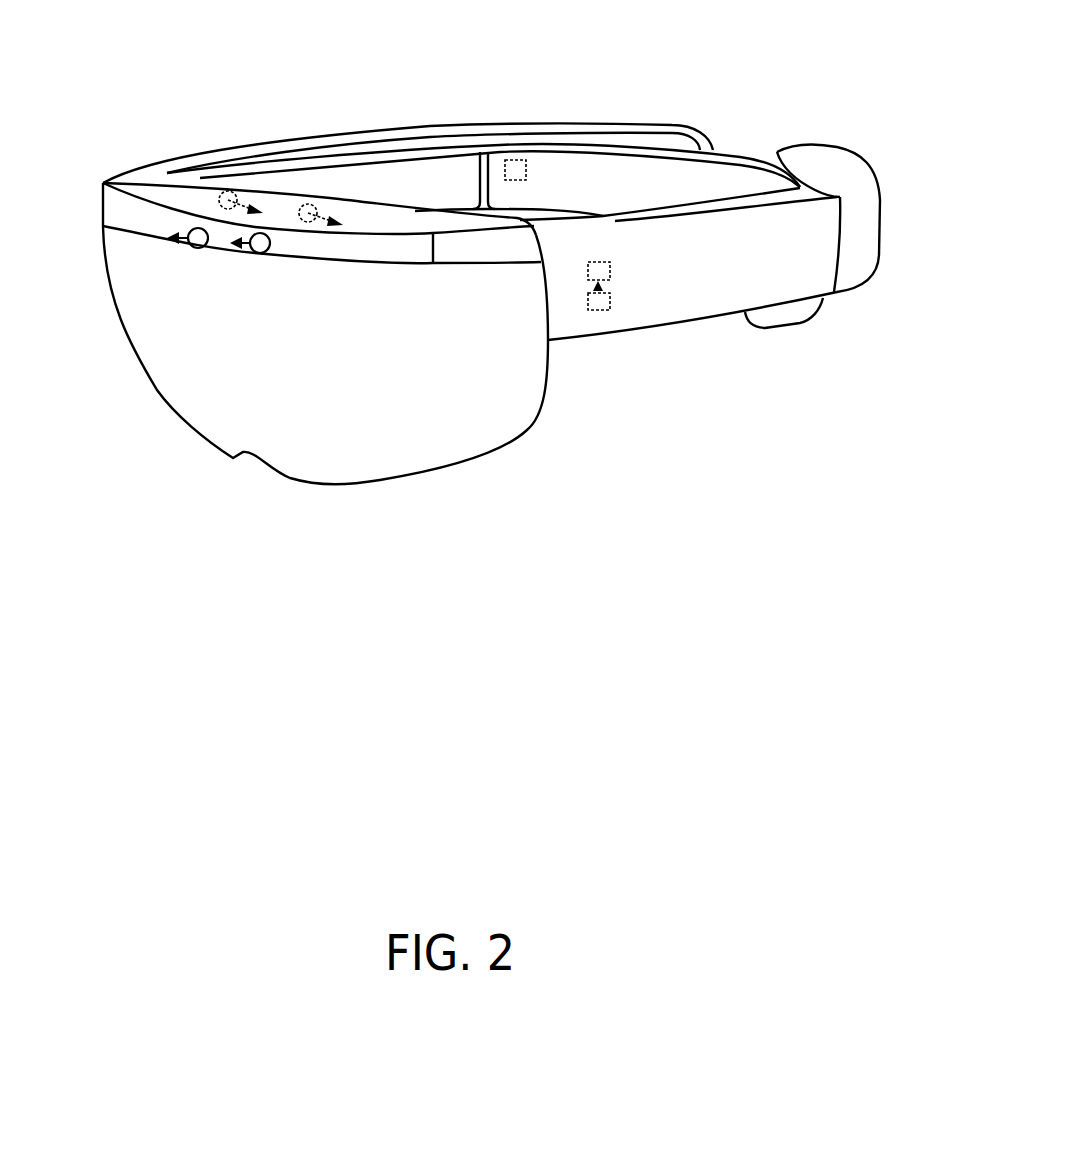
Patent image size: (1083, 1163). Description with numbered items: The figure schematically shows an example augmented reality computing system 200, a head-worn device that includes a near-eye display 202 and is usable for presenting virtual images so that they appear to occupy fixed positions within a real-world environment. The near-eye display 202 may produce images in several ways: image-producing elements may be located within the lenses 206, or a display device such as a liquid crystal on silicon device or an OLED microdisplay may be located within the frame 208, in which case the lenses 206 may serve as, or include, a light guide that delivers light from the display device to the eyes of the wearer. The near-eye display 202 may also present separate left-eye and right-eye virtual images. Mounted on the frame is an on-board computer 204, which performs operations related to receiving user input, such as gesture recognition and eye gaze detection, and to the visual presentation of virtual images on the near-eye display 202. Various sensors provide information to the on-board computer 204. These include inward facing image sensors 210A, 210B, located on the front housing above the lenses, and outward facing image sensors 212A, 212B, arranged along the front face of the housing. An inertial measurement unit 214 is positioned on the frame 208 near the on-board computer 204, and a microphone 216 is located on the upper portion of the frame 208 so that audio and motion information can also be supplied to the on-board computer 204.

The augmented reality computing system 200 is at (708, 45).
The near-eye display 202 is at (122, 358).
The on-board computer 204 is at (600, 262).
The lenses 206 is at (190, 425).
The frame 208 is at (572, 340).
The inward facing image sensor 210A is at (307, 223).
The inward facing image sensor 210B is at (216, 199).
The outward facing image sensor 212A is at (260, 253).
The outward facing image sensor 212B is at (198, 248).
The inertial measurement unit 214 is at (610, 300).
The microphone 216 is at (516, 160).